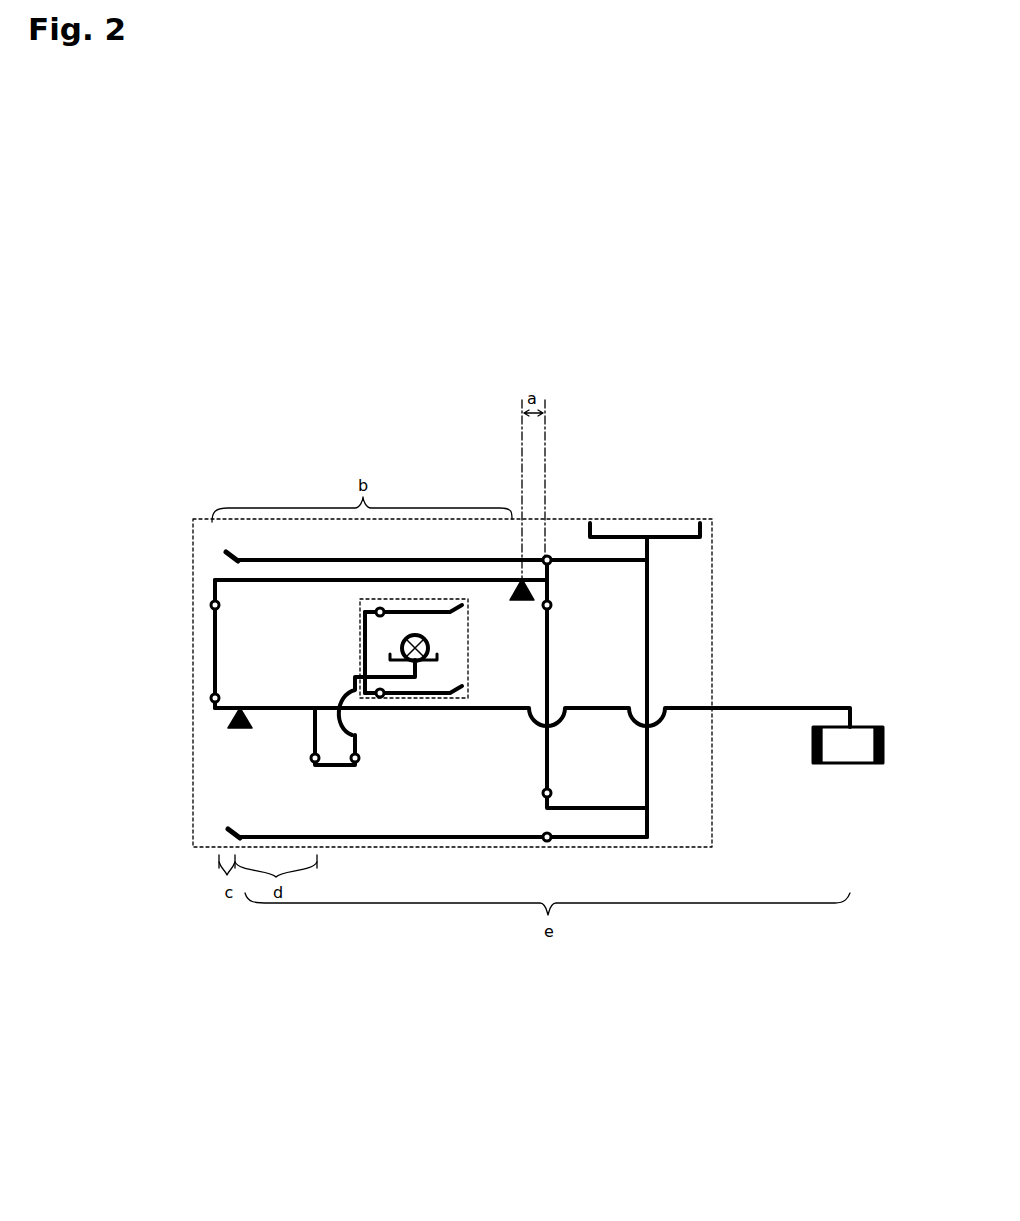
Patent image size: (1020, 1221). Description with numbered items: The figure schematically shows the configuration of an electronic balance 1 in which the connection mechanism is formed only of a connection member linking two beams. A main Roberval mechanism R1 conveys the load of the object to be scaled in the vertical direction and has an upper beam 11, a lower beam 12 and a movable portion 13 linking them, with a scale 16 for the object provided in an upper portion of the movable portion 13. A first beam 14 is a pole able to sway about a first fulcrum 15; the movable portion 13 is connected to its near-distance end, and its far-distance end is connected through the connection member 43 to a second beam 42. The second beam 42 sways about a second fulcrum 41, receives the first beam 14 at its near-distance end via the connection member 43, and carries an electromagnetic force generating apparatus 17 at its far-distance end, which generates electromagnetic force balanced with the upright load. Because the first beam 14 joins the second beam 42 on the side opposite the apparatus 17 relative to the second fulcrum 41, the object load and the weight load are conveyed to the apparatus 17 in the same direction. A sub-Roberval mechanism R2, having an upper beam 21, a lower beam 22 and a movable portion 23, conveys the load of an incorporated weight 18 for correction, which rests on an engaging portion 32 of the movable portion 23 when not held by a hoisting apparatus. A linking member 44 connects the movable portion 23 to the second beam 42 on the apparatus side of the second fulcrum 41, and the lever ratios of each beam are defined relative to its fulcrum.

The electronic balance 1 is at (504, 306).
The upper beam 11 is at (455, 557).
The lower beam 12 is at (613, 840).
The movable portion 13 is at (648, 625).
The first beam 14 is at (260, 578).
The first fulcrum 15 is at (523, 578).
The scale 16 is at (675, 537).
The electromagnetic force generating apparatus 17 is at (845, 742).
The incorporated weight 18 is at (410, 636).
The upper beam 21 is at (388, 610).
The lower beam 22 is at (430, 695).
The movable portion 23 is at (363, 648).
The engaging portion 32 is at (400, 658).
The second fulcrum 41 is at (238, 730).
The second beam 42 is at (763, 710).
The connection member 43 is at (215, 635).
The linking member 44 is at (335, 765).
The main Roberval mechanism R1 is at (712, 645).
The sub-Roberval mechanism R2 is at (470, 660).